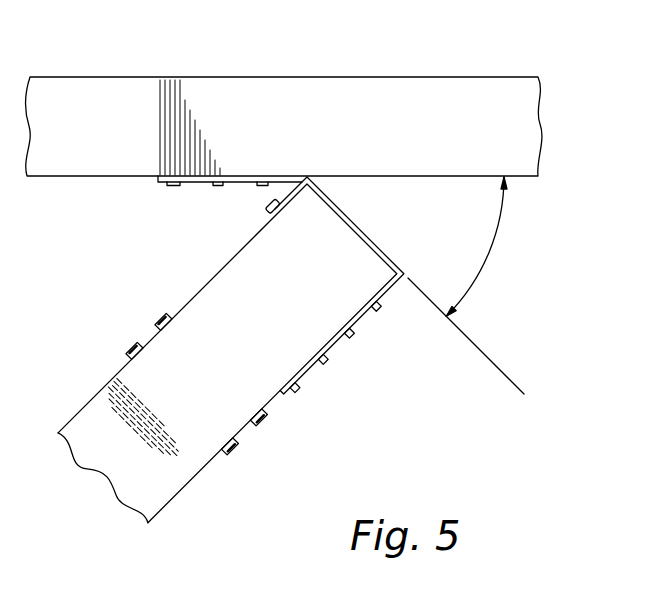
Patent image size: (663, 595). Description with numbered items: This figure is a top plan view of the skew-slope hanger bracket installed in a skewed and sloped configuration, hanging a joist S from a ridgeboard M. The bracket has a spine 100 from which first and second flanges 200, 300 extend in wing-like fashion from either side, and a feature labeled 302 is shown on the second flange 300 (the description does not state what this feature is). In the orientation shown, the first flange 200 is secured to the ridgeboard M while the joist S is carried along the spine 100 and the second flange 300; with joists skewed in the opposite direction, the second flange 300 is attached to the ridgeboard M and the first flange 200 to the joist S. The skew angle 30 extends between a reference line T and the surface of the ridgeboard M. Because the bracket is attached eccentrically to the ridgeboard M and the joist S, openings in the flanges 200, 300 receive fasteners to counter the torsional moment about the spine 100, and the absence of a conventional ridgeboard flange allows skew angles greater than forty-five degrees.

The ridgeboard M is at (390, 82).
The first flange 200 is at (158, 184).
The joist S is at (173, 483).
The spine 100 is at (363, 232).
The latch projections 302 is at (270, 203).
The second flange 300 is at (303, 375).
The skew angle 30 is at (490, 250).
The reference line T is at (512, 389).